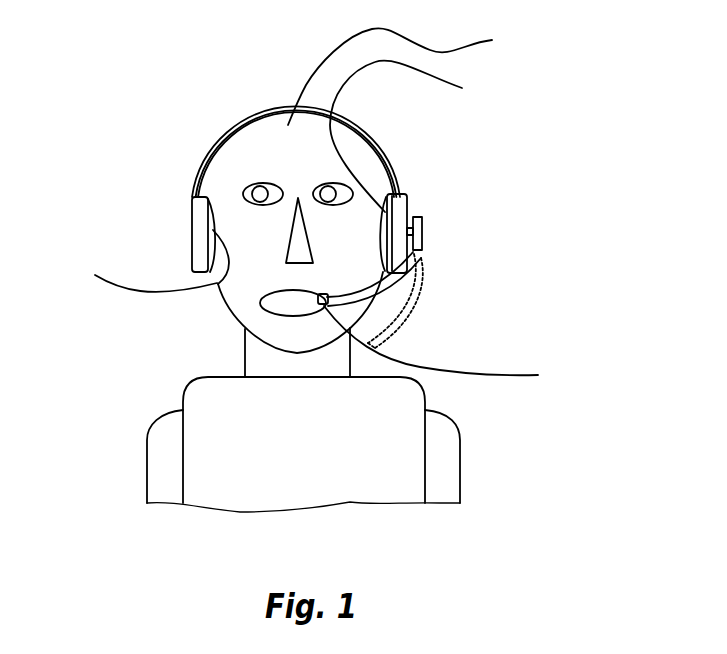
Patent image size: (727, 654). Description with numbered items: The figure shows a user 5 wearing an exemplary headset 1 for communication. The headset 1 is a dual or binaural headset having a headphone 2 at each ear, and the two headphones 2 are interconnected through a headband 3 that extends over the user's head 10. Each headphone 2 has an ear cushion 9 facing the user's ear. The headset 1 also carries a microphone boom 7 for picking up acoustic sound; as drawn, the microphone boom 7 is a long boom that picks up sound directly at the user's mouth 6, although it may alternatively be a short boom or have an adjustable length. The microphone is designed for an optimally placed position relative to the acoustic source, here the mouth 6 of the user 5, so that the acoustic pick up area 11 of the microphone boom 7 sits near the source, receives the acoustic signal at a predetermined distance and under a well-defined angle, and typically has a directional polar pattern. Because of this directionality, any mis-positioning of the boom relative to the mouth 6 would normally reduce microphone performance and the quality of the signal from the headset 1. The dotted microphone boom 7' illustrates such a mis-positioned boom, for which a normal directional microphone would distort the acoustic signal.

The headset 1 is at (494, 211).
The headphone 2 is at (202, 228).
The headband 3 is at (243, 120).
The user 5 is at (311, 463).
The mouth 6 is at (292, 302).
The microphone boom 7 is at (458, 289).
The mis-positioned microphone boom 7' is at (524, 306).
The ear cushion 9 is at (277, 176).
The user's head 10 is at (413, 71).
The acoustic pick up area 11 is at (463, 350).